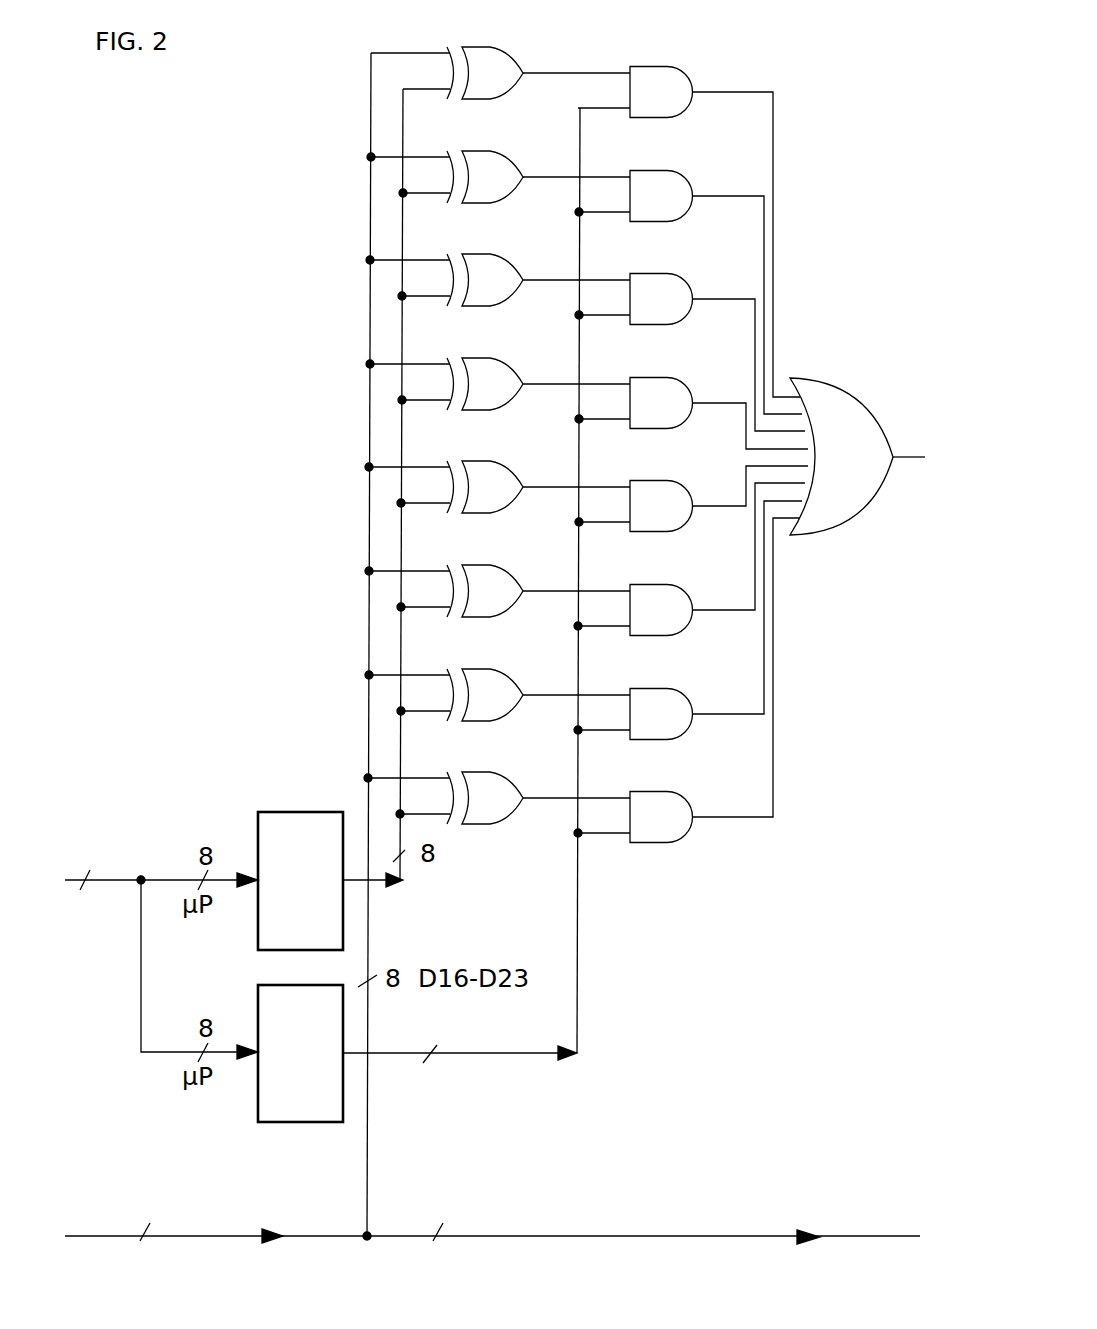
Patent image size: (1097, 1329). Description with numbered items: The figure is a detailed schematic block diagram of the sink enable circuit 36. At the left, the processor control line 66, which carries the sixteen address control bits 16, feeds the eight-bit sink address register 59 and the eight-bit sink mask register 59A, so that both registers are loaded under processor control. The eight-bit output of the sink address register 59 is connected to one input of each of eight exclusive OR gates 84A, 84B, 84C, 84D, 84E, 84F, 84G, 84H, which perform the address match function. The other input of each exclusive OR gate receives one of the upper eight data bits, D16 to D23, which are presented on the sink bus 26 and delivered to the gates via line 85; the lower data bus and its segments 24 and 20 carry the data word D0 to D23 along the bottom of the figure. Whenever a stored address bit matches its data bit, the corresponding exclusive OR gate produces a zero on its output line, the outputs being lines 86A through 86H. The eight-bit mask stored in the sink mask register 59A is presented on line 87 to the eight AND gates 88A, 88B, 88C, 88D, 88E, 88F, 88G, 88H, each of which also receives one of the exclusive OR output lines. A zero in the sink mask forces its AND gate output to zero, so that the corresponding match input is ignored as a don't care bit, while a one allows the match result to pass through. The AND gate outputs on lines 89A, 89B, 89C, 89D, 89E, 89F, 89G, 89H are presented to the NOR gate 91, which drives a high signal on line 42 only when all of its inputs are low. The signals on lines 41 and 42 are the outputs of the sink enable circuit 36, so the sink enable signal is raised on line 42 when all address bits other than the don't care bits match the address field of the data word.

The address control bits 16 is at (161, 950).
The data bus segment 20 is at (444, 1218).
The data bus D0-D23 24 is at (174, 1262).
The sink bus 26 is at (325, 1236).
The sink enable circuit 36 is at (788, 988).
The output line 41 is at (665, 1237).
The sink enable output line 42 is at (910, 453).
The sink address register 59 is at (307, 810).
The sink mask register 59A is at (298, 1125).
The processor control line 66 is at (110, 882).
The exclusive OR gate 84A is at (495, 60).
The exclusive OR gate 84B is at (495, 164).
The exclusive OR gate 84C is at (495, 267).
The exclusive OR gate 84D is at (495, 371).
The exclusive OR gate 84E is at (495, 474).
The exclusive OR gate 84F is at (495, 578).
The exclusive OR gate 84G is at (495, 682).
The exclusive OR gate 84H is at (495, 785).
The line 85 is at (369, 910).
The exclusive OR output line 86A is at (570, 75).
The exclusive OR output line 86H is at (548, 800).
The line 87 is at (578, 923).
The AND gate 88A is at (658, 65).
The AND gate 88B is at (662, 175).
The AND gate 88C is at (662, 278).
The AND gate 88D is at (662, 382).
The AND gate 88E is at (662, 485).
The AND gate 88F is at (662, 589).
The AND gate 88G is at (662, 693).
The AND gate 88H is at (660, 795).
The AND gate output line 89A is at (735, 93).
The AND gate output line 89B is at (727, 195).
The AND gate output line 89C is at (727, 298).
The AND gate output line 89D is at (727, 402).
The AND gate output line 89E is at (727, 505).
The AND gate output line 89F is at (727, 609).
The AND gate output line 89G is at (727, 713).
The AND gate output line 89H is at (727, 816).
The NOR gate 91 is at (842, 403).